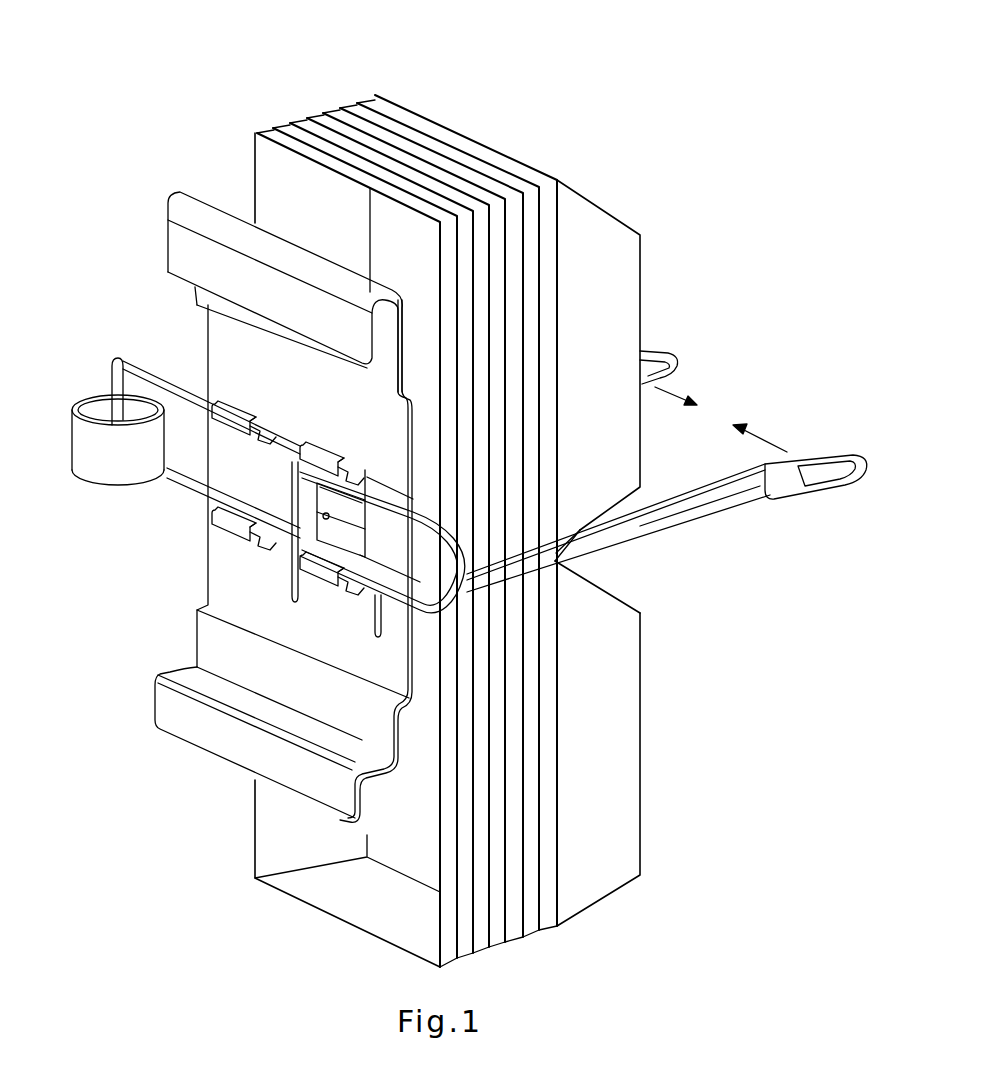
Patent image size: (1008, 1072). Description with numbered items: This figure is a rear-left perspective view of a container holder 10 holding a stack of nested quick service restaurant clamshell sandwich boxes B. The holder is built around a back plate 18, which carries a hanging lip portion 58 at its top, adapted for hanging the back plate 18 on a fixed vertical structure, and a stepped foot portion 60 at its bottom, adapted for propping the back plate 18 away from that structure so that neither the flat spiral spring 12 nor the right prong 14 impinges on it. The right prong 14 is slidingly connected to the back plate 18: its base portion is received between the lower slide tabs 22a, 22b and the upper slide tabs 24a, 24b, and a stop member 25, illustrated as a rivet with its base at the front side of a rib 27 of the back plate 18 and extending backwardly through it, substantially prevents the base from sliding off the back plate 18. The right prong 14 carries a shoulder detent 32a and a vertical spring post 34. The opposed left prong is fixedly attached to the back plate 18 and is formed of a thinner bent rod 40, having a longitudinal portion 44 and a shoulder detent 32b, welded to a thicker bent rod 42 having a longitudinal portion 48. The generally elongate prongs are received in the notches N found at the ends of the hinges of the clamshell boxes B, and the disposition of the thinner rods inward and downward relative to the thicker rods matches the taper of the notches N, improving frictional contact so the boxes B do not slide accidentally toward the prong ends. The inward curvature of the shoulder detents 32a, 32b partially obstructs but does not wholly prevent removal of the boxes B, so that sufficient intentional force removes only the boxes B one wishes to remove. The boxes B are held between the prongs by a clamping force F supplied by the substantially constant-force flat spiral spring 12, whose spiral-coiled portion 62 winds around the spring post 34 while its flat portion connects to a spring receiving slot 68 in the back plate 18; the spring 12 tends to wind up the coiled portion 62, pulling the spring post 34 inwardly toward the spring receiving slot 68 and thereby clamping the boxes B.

The container holder 10 is at (612, 133).
The clamshell sandwich boxes B is at (295, 128).
The flat spiral spring 12 is at (178, 490).
The right prong 14 is at (678, 326).
The back plate 18 is at (215, 367).
The lower slide tab 22a is at (240, 535).
The lower slide tab 22b is at (330, 573).
The upper slide tab 24a is at (235, 407).
The upper slide tab 24b is at (323, 450).
The stop member 25 is at (365, 553).
The rib 27 is at (362, 490).
The shoulder detent 32a is at (668, 356).
The shoulder detent 32b is at (800, 464).
The vertical spring post 34 is at (110, 360).
The thinner bent rod 40 is at (658, 502).
The thicker bent rod 42 is at (643, 533).
The longitudinal portion 44 is at (587, 530).
The longitudinal portion 48 is at (741, 495).
The hanging lip portion 58 is at (215, 272).
The stepped foot portion 60 is at (190, 733).
The spiral-coiled portion 62 is at (120, 473).
The spring receiving slot 68 is at (300, 540).
The clamping force F is at (721, 410).
The notches N is at (590, 563).